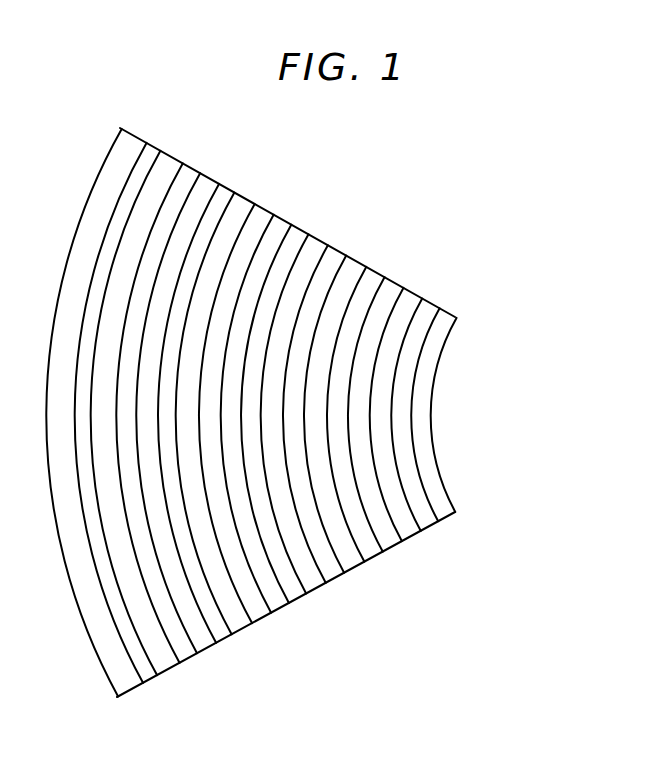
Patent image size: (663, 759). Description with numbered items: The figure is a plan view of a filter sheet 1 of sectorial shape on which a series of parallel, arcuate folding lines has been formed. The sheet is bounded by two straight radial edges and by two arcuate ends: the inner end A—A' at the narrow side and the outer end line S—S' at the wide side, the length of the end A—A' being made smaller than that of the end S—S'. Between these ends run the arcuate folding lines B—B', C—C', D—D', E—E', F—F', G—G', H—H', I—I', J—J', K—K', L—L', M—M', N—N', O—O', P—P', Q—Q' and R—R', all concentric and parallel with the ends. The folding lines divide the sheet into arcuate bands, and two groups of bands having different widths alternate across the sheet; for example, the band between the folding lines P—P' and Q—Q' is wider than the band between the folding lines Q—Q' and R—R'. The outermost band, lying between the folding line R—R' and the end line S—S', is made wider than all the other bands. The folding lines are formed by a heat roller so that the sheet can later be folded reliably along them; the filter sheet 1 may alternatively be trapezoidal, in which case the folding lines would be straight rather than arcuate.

The filter sheet 1 is at (292, 410).
The end line S—S' S is at (89, 410).
The folding line R—R' R is at (117, 410).
The folding line Q—Q' Q is at (132, 410).
The folding line P—P' P is at (154, 410).
The folding line O—O' O is at (174, 410).
The folding line N—N' N is at (195, 411).
The folding line M—M' M is at (213, 411).
The folding line L—L' L is at (232, 411).
The folding line K—K' K is at (254, 411).
The folding line J—J' J is at (271, 411).
The folding line I—I' I is at (289, 411).
The folding line H—H' H is at (312, 411).
The folding line G—G' G is at (332, 412).
The folding line F—F' F is at (352, 412).
The folding line E—E' E is at (373, 412).
The folding line D—D' D is at (394, 412).
The folding line C—C' C is at (413, 412).
The folding line B—B' B is at (432, 412).
The end A—A' A is at (451, 412).